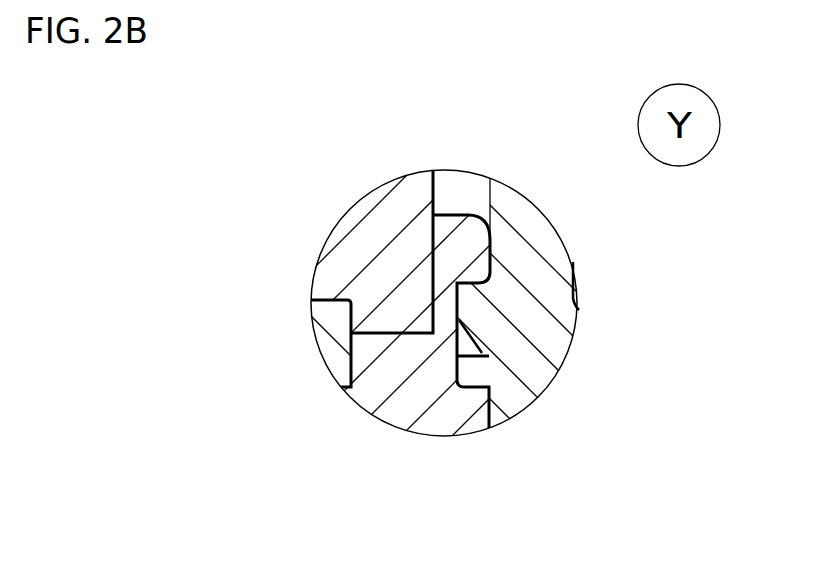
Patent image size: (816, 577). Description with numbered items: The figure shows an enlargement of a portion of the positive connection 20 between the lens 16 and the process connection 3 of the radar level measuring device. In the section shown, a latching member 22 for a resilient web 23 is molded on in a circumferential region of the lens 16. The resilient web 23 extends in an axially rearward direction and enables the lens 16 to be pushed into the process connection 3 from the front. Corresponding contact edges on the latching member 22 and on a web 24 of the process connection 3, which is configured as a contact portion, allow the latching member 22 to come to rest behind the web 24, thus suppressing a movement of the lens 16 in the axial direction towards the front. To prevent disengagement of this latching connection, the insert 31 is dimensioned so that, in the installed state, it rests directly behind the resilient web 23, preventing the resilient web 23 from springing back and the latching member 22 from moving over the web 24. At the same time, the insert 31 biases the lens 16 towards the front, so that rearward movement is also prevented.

The insert 31 is at (373, 291).
The resilient web 23 is at (440, 323).
The latching member 22 is at (465, 248).
The lens 16 is at (410, 410).
The process connection 3 is at (537, 280).
The web 24 is at (473, 300).
The positive connection 20 is at (583, 457).